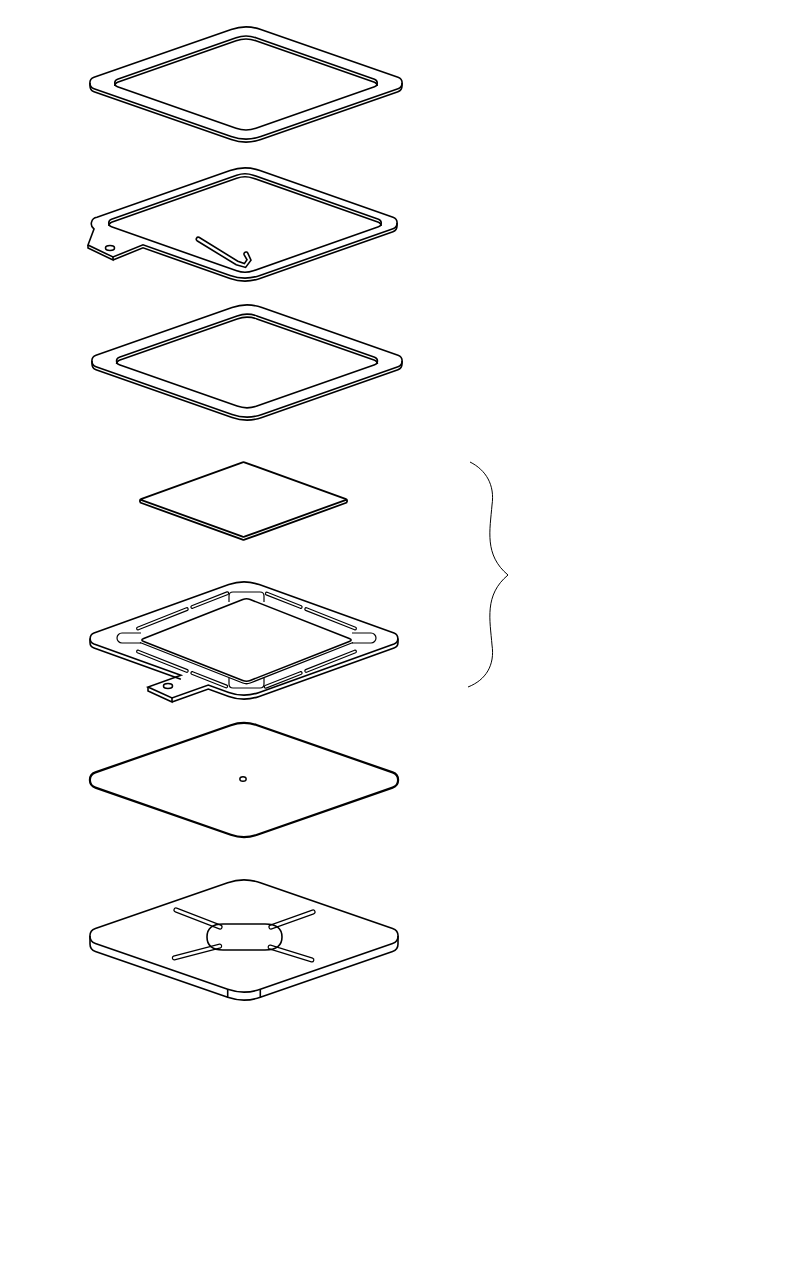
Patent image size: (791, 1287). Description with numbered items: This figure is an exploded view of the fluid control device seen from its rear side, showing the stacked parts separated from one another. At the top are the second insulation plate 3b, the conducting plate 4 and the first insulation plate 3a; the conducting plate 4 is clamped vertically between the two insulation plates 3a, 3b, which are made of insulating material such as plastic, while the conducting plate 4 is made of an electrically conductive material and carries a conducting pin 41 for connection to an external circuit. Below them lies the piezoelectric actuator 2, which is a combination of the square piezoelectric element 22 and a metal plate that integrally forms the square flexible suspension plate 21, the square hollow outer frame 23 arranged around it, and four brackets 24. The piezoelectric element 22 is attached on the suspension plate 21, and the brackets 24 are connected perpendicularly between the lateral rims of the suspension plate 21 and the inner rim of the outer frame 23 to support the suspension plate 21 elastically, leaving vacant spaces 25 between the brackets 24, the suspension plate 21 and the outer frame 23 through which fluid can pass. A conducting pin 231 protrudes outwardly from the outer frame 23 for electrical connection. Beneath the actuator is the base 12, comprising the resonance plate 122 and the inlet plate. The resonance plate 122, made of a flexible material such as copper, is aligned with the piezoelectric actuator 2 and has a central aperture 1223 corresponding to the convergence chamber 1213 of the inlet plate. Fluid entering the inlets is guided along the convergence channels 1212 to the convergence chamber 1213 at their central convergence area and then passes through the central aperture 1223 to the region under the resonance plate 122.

The piezoelectric actuator 2 is at (300, 810).
The first insulation plate 3a is at (382, 360).
The second insulation plate 3b is at (323, 57).
The conducting plate 4 is at (258, 233).
The conducting pin 41 is at (200, 245).
The base 12 is at (277, 921).
The convergence channel 1212 is at (300, 913).
The convergence chamber 1213 is at (247, 938).
The resonance plate 122 is at (285, 771).
The central aperture 1223 is at (248, 778).
The suspension plate 21 is at (265, 622).
The piezoelectric element 22 is at (293, 495).
The outer frame 23 is at (380, 640).
The conducting pin 231 is at (160, 680).
The bracket 24 is at (307, 610).
The vacant space 25 is at (235, 593).